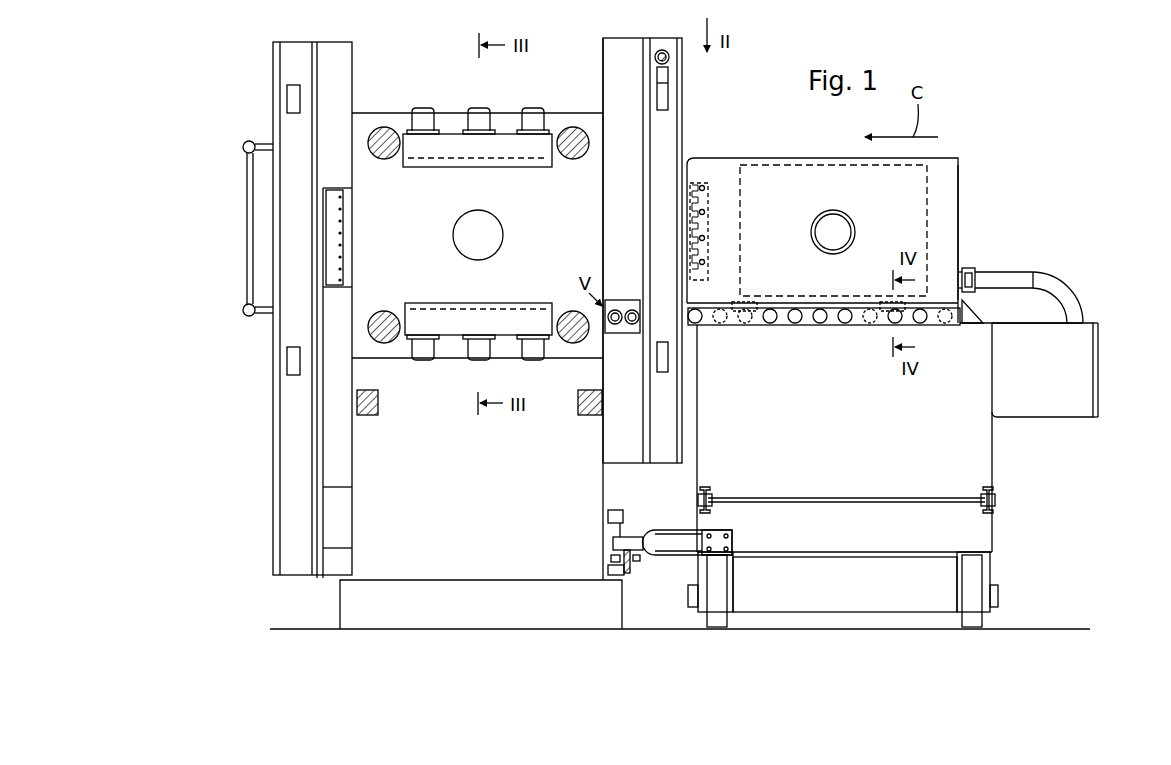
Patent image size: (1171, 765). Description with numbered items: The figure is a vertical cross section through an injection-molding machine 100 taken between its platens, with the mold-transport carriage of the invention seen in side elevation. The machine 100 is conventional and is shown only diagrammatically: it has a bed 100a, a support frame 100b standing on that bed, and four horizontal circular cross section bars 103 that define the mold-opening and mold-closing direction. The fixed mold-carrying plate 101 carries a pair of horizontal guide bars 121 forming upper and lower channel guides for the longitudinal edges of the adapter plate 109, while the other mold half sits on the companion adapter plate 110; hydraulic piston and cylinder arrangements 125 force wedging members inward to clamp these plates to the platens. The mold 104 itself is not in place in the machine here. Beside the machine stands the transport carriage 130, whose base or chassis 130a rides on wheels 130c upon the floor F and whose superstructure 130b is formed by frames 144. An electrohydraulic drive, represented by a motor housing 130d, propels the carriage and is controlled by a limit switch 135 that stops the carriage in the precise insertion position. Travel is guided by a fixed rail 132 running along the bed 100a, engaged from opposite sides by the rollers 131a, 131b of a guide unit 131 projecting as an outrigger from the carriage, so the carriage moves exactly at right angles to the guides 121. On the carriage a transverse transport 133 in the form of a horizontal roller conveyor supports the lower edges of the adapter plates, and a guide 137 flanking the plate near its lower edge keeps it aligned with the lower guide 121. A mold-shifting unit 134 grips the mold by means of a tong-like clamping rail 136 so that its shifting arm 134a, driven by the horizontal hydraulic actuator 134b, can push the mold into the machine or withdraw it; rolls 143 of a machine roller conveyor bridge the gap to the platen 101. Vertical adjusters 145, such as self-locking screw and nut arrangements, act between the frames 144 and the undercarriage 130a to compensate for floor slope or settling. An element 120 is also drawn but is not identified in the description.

The injection-molding machine 100 is at (455, 112).
The bed 100a is at (361, 622).
The support frame 100b is at (368, 416).
The fixed mold-carrying plate 101 is at (558, 239).
The circular cross section bars 103 is at (388, 128).
The mold 104 is at (800, 172).
The adapter plate 109 is at (847, 214).
The adapter plate 110 is at (725, 174).
The die holder 120 is at (690, 158).
The guide bars 121 is at (457, 142).
The hydraulic piston and cylinder arrangements 125 is at (484, 112).
The transport carriage 130 is at (965, 492).
The base or chassis 130a is at (995, 535).
The superstructure 130b is at (995, 448).
The wheels 130c is at (714, 626).
The motor housing 130d is at (870, 598).
The guide unit 131 is at (623, 536).
The roller 131a is at (611, 545).
The roller 131b is at (642, 560).
The fixed rail 132 is at (632, 573).
The transverse transport 133 is at (775, 324).
The mold-shifting unit 134 is at (1071, 287).
The shifting arm 134a is at (1033, 272).
The actuator 134b is at (1078, 371).
The limit switch 135 is at (606, 518).
The tong-like clamping rail 136 is at (968, 268).
The guide 137 is at (743, 302).
The rolls of roller conveyor 143 is at (612, 300).
The frames 144 is at (990, 438).
The vertical adjusters 145 is at (697, 500).
The floor F is at (641, 630).